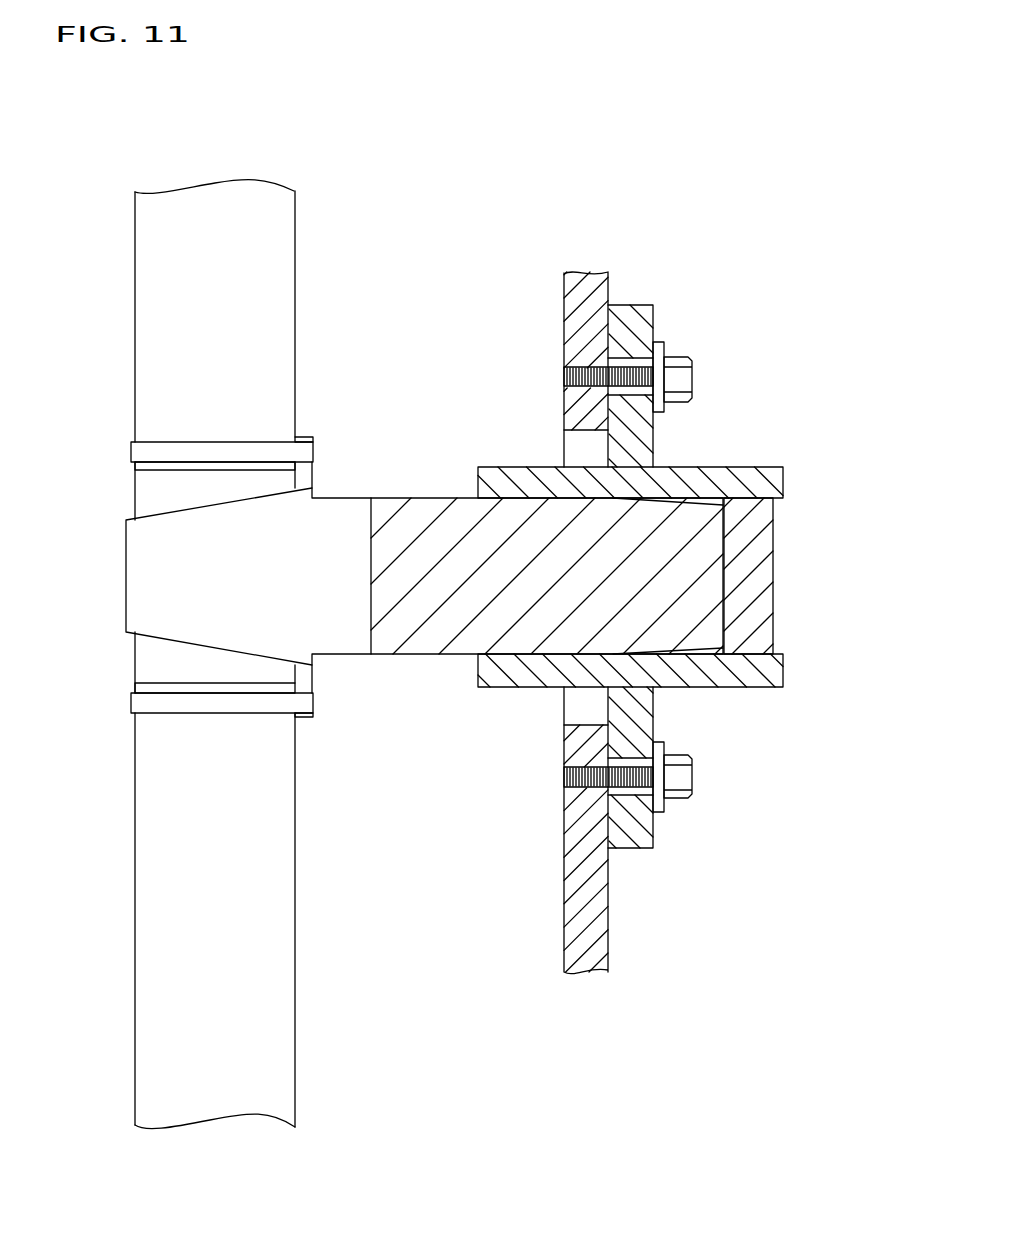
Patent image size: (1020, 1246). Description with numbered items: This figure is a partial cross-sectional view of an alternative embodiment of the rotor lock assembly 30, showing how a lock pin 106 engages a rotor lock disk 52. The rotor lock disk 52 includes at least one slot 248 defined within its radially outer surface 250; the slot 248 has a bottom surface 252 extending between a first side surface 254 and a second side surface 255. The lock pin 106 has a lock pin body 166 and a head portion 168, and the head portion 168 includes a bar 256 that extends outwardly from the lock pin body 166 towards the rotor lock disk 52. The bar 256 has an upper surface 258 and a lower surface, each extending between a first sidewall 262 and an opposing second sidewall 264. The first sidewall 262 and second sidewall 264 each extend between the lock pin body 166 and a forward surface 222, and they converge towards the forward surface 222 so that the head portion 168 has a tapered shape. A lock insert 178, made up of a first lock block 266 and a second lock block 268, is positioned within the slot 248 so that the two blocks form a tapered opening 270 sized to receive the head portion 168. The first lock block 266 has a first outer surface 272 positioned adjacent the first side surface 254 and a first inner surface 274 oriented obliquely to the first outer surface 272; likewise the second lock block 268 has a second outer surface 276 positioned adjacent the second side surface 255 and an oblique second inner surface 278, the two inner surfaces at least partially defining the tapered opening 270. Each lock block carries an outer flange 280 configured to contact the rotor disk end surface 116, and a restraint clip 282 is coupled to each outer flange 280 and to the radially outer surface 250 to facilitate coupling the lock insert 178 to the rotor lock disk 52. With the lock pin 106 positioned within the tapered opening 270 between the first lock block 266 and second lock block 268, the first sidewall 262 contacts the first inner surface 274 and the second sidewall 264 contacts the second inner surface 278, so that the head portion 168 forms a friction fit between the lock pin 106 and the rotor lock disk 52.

The rotor lock assembly 30 is at (682, 132).
The rotor lock disk 52 is at (296, 259).
The rotor disk end surface 116 is at (296, 304).
The lock insert 178 is at (300, 373).
The bar 256 is at (370, 418).
The restraint clip 282 is at (252, 447).
The head portion 168 is at (420, 412).
The lock pin 106 is at (480, 455).
The lock pin body 166 is at (453, 497).
The outer flange 280 is at (313, 441).
The first inner surface 274 is at (312, 488).
The first outer surface 272 is at (223, 447).
The first lock block 266 is at (167, 447).
The first side surface 254 is at (157, 470).
The slot 248 is at (122, 496).
The forward surface 222 is at (126, 542).
The upper surface 258 is at (147, 578).
The first sidewall 262 is at (208, 502).
The second sidewall 264 is at (203, 645).
The second inner surface 278 is at (230, 653).
The bottom surface 252 is at (157, 657).
The second side surface 255 is at (173, 683).
The second lock block 268 is at (230, 673).
The second outer surface 276 is at (208, 683).
The radially outer surface 250 is at (183, 893).
The tapered opening 270 is at (288, 648).